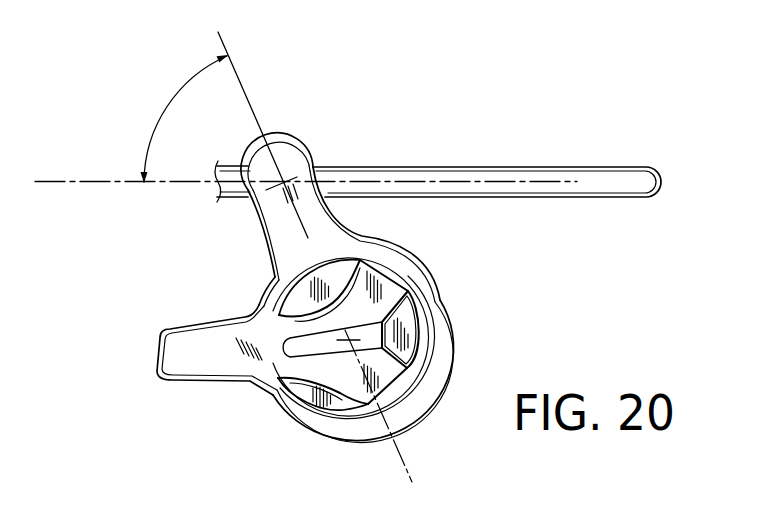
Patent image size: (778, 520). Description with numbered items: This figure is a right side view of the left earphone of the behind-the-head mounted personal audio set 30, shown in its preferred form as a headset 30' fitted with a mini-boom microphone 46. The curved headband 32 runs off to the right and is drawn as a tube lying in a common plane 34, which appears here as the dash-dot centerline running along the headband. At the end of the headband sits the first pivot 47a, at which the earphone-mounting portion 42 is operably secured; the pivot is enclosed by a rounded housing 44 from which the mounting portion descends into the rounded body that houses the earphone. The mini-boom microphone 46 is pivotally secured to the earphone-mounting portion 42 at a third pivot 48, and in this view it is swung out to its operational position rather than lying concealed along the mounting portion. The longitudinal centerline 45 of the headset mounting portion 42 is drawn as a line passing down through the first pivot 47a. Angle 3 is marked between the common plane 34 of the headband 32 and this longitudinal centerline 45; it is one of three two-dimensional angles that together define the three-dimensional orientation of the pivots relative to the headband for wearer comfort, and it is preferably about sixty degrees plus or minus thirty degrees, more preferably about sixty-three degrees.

The behind-the-head mounted personal audio set 30 is at (408, 313).
The headset 30' is at (410, 350).
The curved headband 32 is at (550, 170).
The common plane 34 is at (438, 164).
The earphone-mounting portion 42 is at (280, 218).
The pivot housing 44 is at (326, 166).
The longitudinal centerline 45 is at (337, 278).
The mini-boom microphone 46 is at (167, 352).
The first pivot 47a is at (283, 184).
The third pivot 48 is at (362, 330).
The angle 3 is at (208, 135).